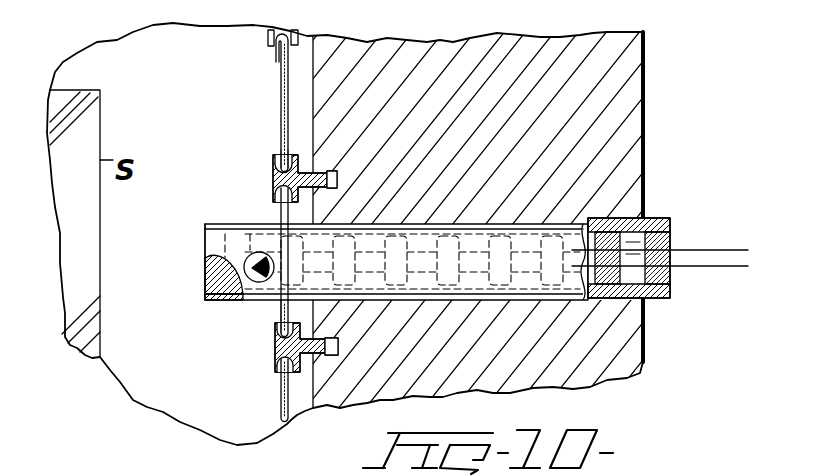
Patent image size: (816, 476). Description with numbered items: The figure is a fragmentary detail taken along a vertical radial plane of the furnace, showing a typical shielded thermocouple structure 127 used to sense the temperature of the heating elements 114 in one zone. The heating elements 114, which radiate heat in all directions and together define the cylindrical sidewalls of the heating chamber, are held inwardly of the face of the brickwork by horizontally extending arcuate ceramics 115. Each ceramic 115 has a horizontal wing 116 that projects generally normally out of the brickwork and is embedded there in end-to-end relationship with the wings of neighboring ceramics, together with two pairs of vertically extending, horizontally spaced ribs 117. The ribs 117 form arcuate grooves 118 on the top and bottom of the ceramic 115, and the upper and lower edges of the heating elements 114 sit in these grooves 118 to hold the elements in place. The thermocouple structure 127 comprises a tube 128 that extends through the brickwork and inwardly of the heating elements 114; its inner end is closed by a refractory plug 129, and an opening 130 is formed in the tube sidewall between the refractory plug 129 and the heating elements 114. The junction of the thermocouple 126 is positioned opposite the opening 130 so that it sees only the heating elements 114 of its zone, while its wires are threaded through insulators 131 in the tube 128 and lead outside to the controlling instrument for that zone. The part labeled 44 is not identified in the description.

The clip 44 is at (281, 68).
The heating elements 114 is at (286, 90).
The arcuate ceramics 115 is at (273, 180).
The horizontal wing 116 is at (323, 175).
The ribs 117 is at (276, 158).
The arcuate grooves 118 is at (273, 150).
The thermocouple 126 is at (260, 250).
The thermocouple structure 127 is at (455, 223).
The tube 128 is at (613, 218).
The refractory plug 129 is at (205, 285).
The opening 130 is at (282, 310).
The insulators 131 is at (612, 297).